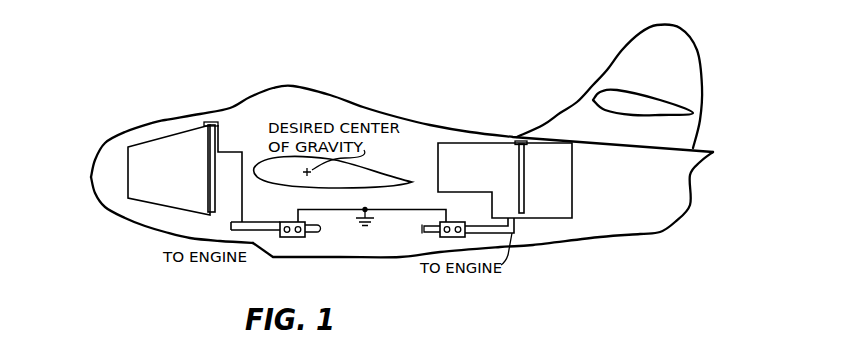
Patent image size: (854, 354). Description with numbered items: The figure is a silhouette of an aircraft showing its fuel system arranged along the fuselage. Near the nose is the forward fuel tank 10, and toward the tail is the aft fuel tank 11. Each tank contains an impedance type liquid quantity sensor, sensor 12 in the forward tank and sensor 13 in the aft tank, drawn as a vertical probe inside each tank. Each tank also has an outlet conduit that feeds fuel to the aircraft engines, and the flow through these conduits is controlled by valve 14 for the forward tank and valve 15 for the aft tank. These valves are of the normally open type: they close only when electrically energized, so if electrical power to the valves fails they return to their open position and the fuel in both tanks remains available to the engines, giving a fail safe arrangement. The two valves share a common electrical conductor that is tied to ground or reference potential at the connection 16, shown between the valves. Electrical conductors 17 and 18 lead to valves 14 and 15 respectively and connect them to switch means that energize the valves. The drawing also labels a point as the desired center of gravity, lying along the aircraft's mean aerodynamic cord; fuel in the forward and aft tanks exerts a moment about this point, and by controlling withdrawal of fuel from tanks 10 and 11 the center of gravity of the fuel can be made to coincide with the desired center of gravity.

The forward fuel tank 10 is at (219, 147).
The aft fuel tank 11 is at (573, 158).
The impedance type liquid quantity sensor 12 is at (216, 124).
The impedance type liquid quantity sensor 13 is at (517, 141).
The valve 14 is at (302, 237).
The valve 15 is at (438, 236).
The connection 16 is at (363, 221).
The electrical conductor 17 is at (287, 222).
The electrical conductor 18 is at (460, 222).